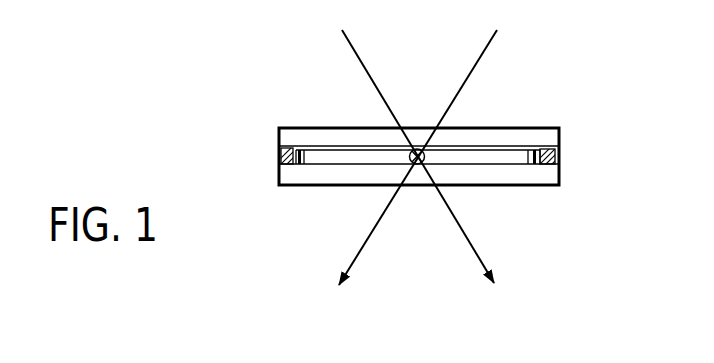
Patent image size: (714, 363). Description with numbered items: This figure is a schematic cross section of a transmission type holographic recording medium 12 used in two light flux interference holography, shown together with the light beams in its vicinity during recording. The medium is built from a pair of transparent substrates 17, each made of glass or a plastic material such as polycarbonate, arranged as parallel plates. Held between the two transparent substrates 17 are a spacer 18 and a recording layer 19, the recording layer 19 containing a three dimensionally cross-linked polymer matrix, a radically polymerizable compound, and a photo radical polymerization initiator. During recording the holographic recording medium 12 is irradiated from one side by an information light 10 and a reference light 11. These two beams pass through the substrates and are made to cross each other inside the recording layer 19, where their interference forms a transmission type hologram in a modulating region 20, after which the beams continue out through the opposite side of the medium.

The information light 10 is at (478, 60).
The reference light 11 is at (360, 62).
The transmission type holographic recording medium 12 is at (584, 106).
The transparent substrate 17 is at (553, 142).
The spacer 18 is at (558, 153).
The recording layer 19 is at (500, 157).
The modulating region 20 is at (417, 165).